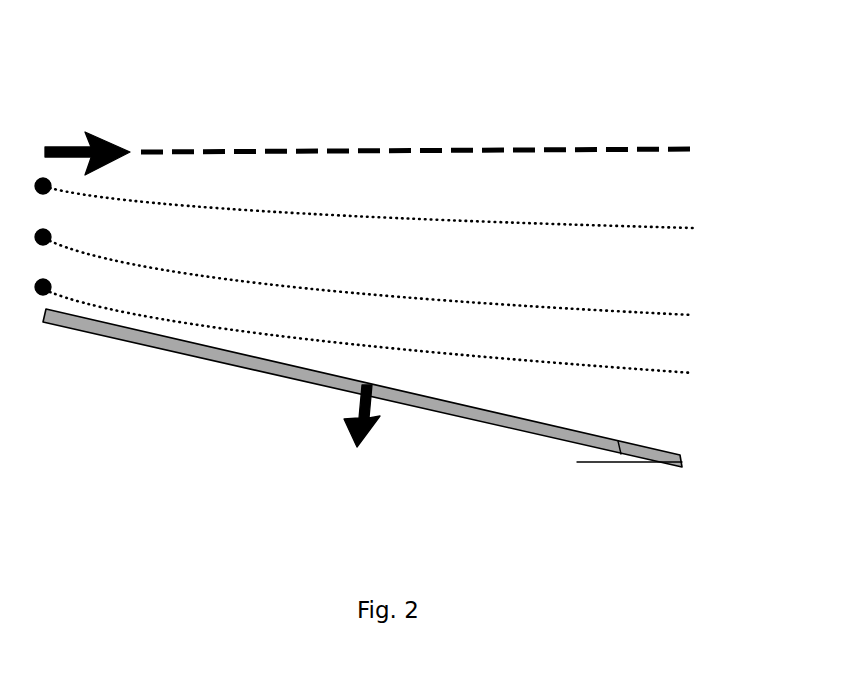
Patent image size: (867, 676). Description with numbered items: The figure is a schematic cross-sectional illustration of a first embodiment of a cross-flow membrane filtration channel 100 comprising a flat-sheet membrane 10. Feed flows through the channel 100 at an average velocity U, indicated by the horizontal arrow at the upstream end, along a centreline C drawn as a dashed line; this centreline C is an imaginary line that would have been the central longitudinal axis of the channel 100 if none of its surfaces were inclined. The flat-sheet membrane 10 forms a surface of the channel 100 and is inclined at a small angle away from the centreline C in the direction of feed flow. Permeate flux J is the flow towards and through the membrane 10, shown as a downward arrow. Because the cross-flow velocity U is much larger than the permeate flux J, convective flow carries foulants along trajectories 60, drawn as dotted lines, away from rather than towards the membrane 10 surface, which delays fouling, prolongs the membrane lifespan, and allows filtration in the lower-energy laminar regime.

The cross-flow membrane filtration channel 100 is at (372, 97).
The centreline C is at (563, 148).
The trajectories 60 is at (702, 215).
The flat-sheet membrane 10 is at (467, 420).
The average velocity U is at (87, 138).
The permeate flux J is at (344, 416).